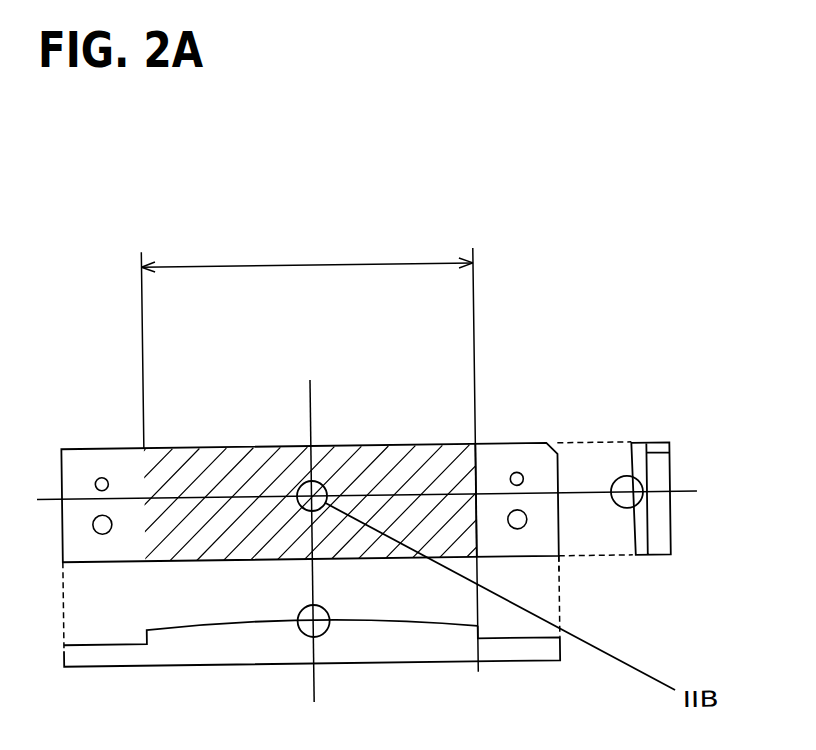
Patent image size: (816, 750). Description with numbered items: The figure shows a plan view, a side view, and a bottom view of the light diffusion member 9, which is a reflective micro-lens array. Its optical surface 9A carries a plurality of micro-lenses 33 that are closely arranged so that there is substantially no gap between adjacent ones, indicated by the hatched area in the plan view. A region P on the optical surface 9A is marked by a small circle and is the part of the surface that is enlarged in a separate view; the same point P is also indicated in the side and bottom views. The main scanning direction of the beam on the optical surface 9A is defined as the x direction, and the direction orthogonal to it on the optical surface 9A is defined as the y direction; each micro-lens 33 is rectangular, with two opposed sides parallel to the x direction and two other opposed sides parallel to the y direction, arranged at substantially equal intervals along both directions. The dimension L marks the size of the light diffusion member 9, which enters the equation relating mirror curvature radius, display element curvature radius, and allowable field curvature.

The light diffusion member 9 is at (364, 448).
The optical surface 9A is at (433, 449).
The micro-lens 33 is at (214, 446).
The region P is at (301, 486).
The x direction x is at (582, 494).
The y direction y is at (312, 398).
The size of the light diffusion member L is at (309, 454).